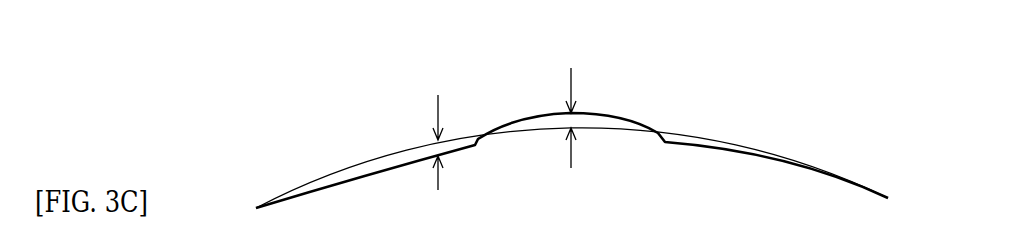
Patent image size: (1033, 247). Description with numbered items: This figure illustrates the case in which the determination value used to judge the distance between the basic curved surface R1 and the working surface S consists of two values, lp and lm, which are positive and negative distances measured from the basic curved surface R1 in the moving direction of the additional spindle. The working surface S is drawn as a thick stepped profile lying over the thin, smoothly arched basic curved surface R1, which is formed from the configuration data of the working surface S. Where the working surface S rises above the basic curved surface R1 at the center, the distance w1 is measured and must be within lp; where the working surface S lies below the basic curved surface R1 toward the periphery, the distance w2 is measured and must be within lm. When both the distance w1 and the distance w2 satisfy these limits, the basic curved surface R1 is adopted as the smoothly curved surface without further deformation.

The working surface S is at (627, 117).
The basic curved surface R1 is at (665, 132).
The distance w1 is at (576, 135).
The distance w2 is at (441, 159).